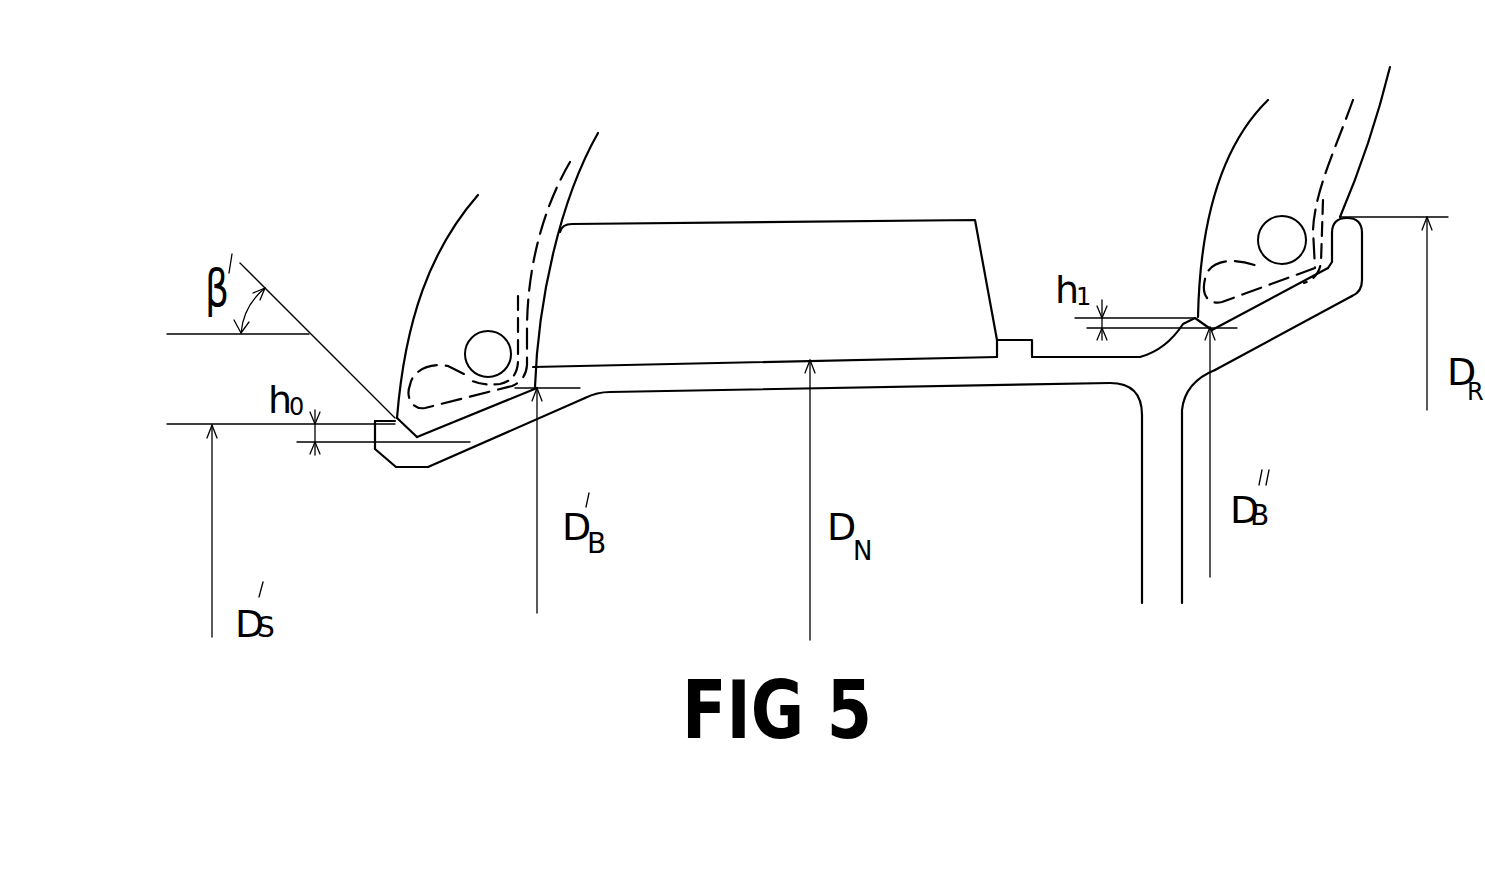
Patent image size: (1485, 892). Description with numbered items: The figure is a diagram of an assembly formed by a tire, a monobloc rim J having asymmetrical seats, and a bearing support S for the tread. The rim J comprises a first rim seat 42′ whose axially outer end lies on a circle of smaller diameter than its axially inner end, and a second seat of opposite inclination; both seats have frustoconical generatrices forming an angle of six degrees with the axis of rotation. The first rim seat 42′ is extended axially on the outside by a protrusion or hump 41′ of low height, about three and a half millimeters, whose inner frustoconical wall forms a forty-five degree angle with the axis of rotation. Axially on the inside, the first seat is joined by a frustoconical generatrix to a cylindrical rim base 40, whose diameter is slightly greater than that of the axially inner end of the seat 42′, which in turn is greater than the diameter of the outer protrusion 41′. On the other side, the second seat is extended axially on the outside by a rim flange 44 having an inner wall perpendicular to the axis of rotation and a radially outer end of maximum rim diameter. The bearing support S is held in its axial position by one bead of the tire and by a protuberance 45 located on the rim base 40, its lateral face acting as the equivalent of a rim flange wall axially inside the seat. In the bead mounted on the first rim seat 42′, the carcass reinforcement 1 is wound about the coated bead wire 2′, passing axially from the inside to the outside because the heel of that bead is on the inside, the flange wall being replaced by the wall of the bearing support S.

The carcass reinforcement 1 is at (543, 200).
The coated bead wire 2′ is at (480, 263).
The rim base 40 is at (732, 377).
The protrusion or hump 41′ is at (390, 455).
The first rim seat 42′ is at (487, 415).
The rim flange 44 is at (1345, 248).
The protuberance 45 is at (1015, 348).
The bearing support S is at (773, 320).
The rim J is at (947, 370).